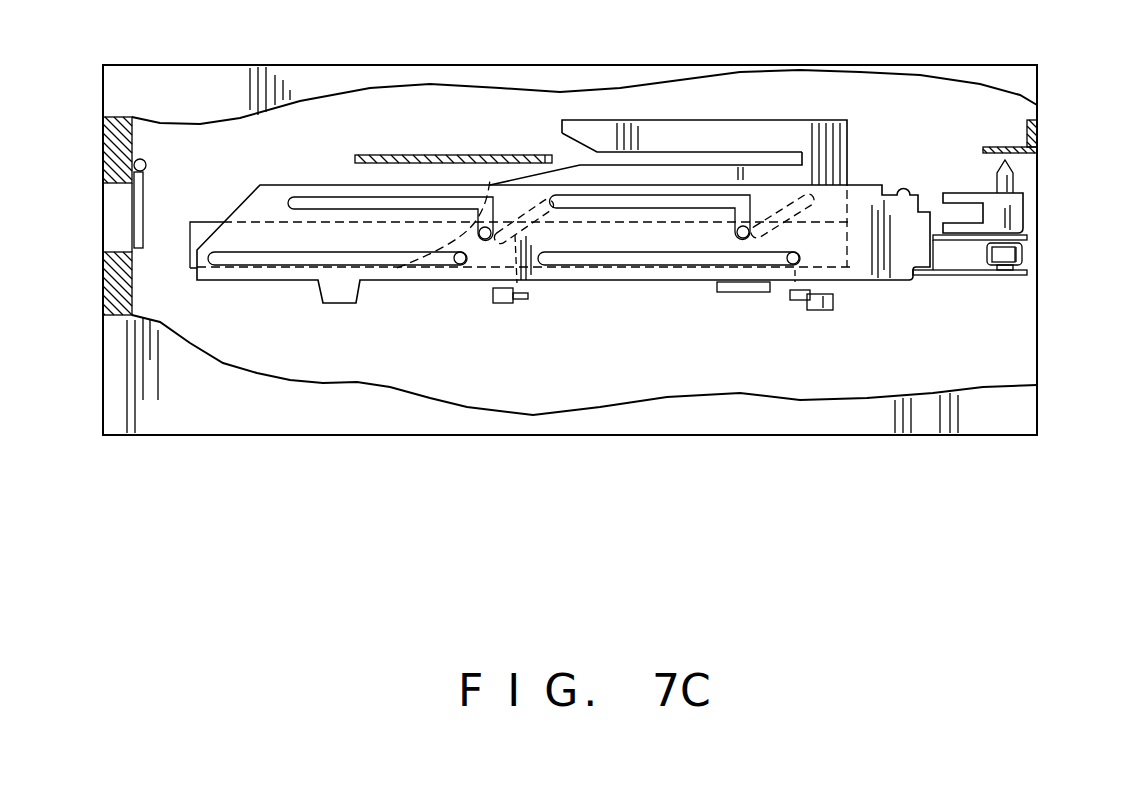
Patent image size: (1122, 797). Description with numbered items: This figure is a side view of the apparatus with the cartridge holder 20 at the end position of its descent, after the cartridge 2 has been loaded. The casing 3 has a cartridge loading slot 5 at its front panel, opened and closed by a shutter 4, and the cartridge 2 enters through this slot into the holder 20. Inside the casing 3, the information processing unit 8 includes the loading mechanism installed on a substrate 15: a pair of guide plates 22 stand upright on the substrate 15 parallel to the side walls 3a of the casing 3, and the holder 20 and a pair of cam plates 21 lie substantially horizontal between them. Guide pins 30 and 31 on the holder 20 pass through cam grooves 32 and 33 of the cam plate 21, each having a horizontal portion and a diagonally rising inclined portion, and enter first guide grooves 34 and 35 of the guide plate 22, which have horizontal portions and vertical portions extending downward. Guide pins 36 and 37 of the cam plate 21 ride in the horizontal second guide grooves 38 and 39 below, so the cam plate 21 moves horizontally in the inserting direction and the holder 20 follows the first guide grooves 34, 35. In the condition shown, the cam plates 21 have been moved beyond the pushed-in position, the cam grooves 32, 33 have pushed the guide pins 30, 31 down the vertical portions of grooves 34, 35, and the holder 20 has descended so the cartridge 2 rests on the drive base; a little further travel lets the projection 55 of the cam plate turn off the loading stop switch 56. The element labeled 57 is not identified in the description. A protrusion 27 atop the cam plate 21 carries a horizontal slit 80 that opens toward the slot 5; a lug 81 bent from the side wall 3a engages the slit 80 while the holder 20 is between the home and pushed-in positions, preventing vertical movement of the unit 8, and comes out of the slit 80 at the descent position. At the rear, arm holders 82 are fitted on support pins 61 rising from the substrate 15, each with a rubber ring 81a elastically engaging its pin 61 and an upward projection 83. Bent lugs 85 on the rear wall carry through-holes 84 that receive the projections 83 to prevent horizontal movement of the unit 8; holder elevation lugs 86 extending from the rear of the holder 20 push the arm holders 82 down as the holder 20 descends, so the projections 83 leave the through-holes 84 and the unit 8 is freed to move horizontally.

The cartridge 2 is at (823, 300).
The casing 3 is at (237, 53).
The side wall 3a is at (395, 97).
The shutter 4 is at (143, 197).
The cartridge loading slot 5 is at (103, 244).
The information processing unit 8 is at (865, 182).
The substrate 15 is at (942, 277).
The cartridge holder 20 is at (847, 190).
The cam plate 21 is at (778, 148).
The guide plate 22 is at (865, 272).
The protrusion 27 is at (647, 133).
The guide pin 30 is at (485, 240).
The guide pin 31 is at (742, 238).
The cam groove 32 is at (517, 283).
The cam groove 33 is at (795, 282).
The first guide groove 34 is at (371, 205).
The first guide groove 35 is at (613, 208).
The guide pin 36 is at (457, 265).
The guide pin 37 is at (792, 265).
The second guide groove 38 is at (288, 262).
The second guide groove 39 is at (657, 262).
The projection 55 is at (800, 305).
The loading stop switch 56 is at (833, 302).
The switch 57 is at (510, 303).
The support pin 61 is at (1003, 277).
The slit 80 is at (698, 162).
The lug 81 is at (470, 155).
The rubber ring 81a is at (1022, 260).
The arm holder 82 is at (1020, 217).
The projection 83 is at (1015, 185).
The through-hole 84 is at (1028, 140).
The bent lug 85 is at (997, 143).
The holder elevation lug 86 is at (967, 240).